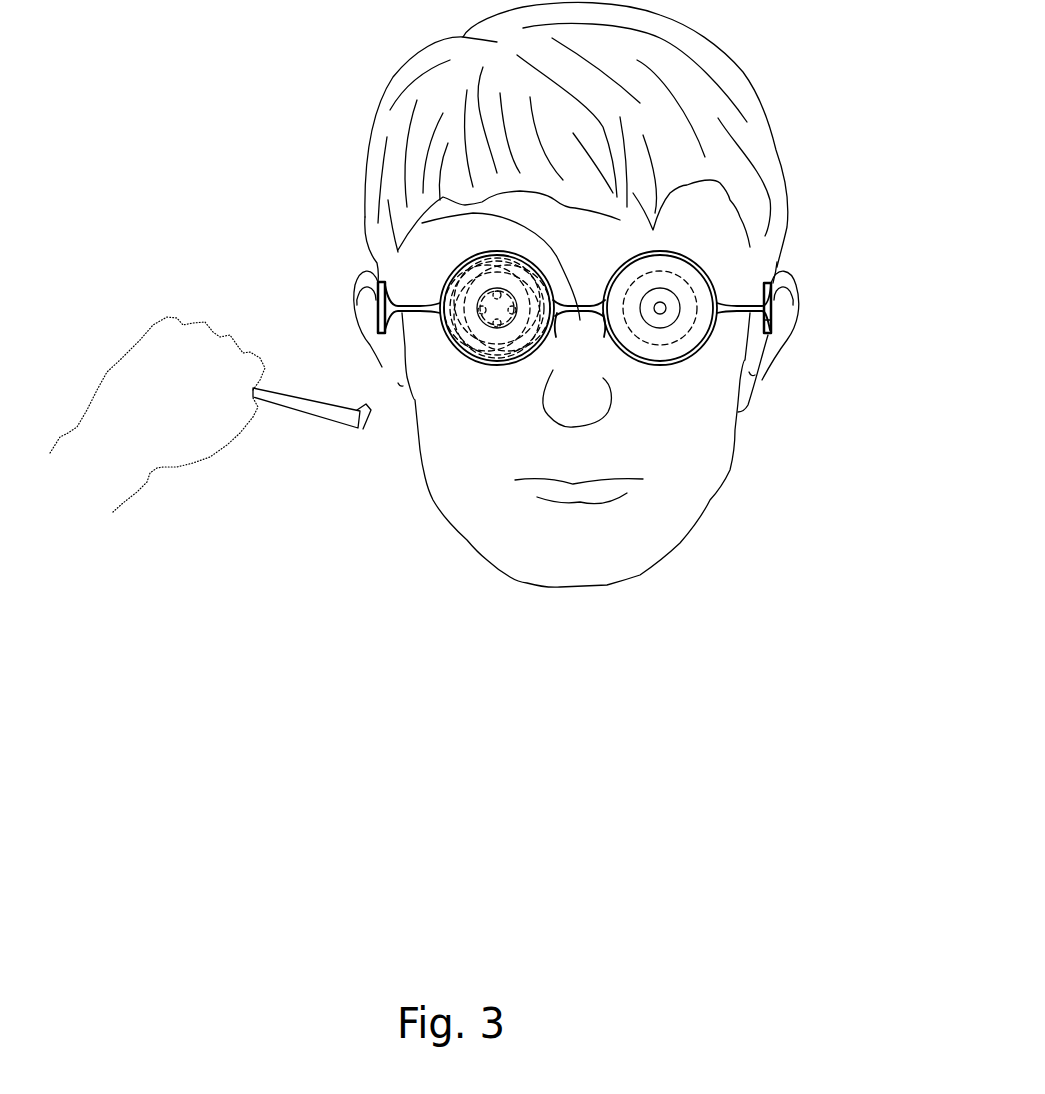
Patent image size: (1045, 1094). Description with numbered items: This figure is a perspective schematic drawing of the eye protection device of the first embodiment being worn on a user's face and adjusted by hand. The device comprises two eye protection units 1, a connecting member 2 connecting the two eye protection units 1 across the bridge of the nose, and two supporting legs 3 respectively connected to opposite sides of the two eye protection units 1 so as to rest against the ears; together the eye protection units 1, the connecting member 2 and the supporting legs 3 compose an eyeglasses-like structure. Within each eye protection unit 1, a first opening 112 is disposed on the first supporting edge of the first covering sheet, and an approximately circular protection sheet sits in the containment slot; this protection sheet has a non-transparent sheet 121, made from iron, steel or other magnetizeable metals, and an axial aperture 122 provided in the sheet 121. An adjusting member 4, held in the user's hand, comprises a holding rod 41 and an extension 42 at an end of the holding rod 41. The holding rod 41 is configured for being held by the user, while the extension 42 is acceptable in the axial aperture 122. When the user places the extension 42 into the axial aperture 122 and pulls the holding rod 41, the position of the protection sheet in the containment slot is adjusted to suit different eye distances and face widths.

The eye protection unit 1 is at (704, 271).
The connecting member 2 is at (422, 223).
The supporting leg 3 is at (771, 310).
The adjusting member 4 is at (210, 351).
The holding rod 41 is at (307, 413).
The extension 42 is at (367, 402).
The first opening 112 is at (665, 328).
The non-transparent sheet 121 is at (692, 330).
The axial aperture 122 is at (662, 308).